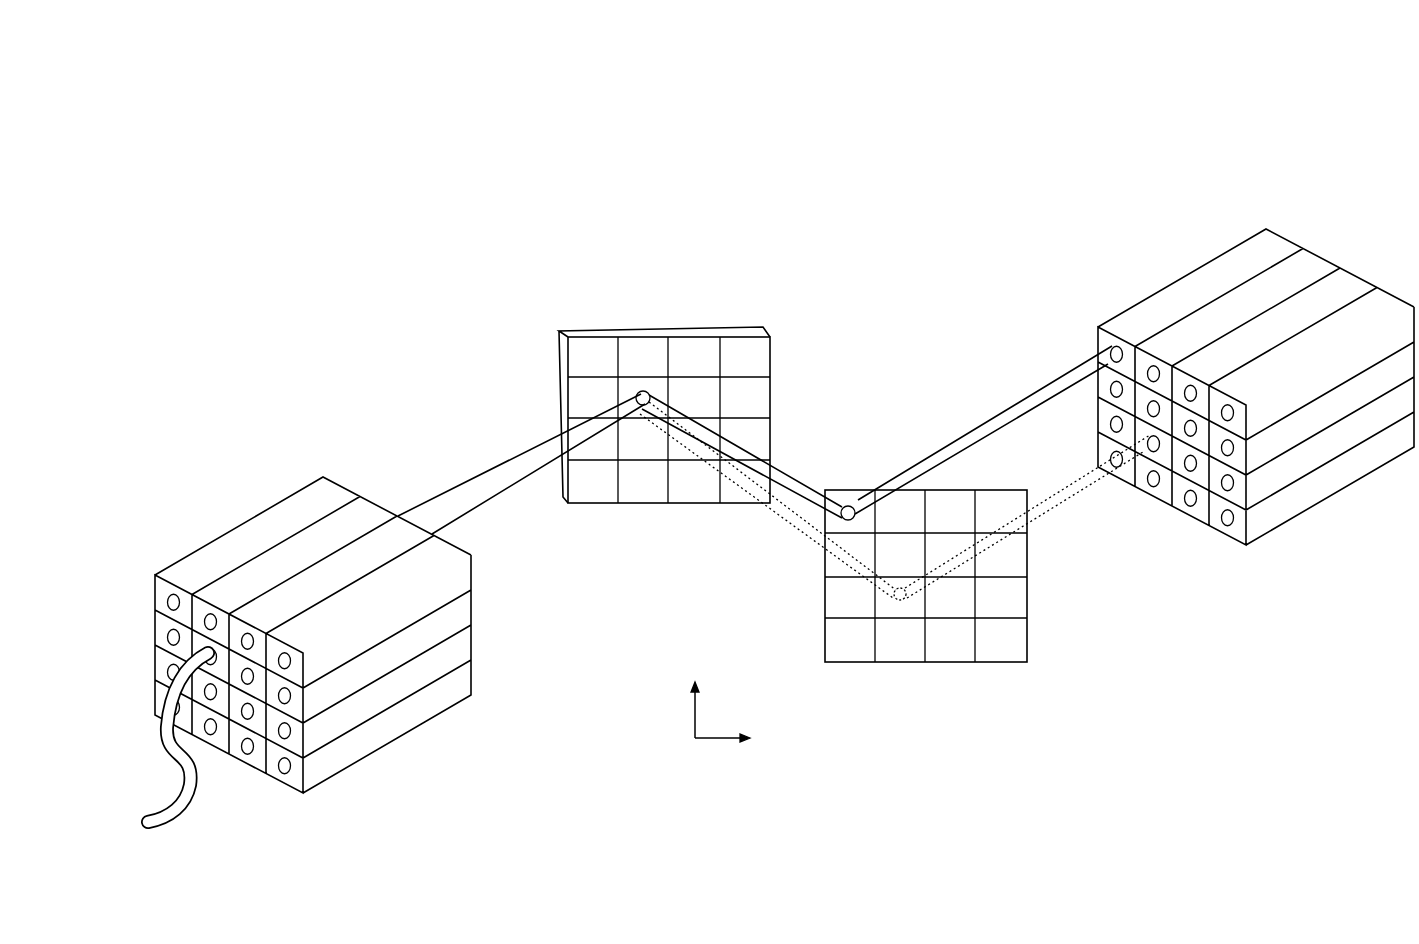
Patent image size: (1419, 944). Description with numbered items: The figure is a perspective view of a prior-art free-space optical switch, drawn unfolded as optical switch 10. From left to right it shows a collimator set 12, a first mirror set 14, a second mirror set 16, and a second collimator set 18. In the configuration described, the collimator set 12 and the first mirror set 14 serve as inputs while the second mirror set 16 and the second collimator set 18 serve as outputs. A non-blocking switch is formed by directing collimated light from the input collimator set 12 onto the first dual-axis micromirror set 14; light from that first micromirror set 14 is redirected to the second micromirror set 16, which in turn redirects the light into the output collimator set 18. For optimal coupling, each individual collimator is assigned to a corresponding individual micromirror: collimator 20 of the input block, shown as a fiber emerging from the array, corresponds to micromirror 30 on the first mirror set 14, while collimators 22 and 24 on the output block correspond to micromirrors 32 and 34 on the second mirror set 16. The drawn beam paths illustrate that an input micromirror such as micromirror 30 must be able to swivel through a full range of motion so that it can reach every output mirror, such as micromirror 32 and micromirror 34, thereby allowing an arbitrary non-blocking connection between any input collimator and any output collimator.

The unfolded optical switch 10 is at (1160, 122).
The collimator set 12 is at (258, 527).
The first mirror set 14 is at (592, 330).
The second mirror set 16 is at (1017, 695).
The second collimator set 18 is at (1308, 262).
The collimator 20 is at (160, 806).
The collimator 22 is at (1110, 355).
The collimator 24 is at (1148, 442).
The micromirror 30 is at (645, 390).
The micromirror 32 is at (848, 505).
The micromirror 34 is at (903, 600).